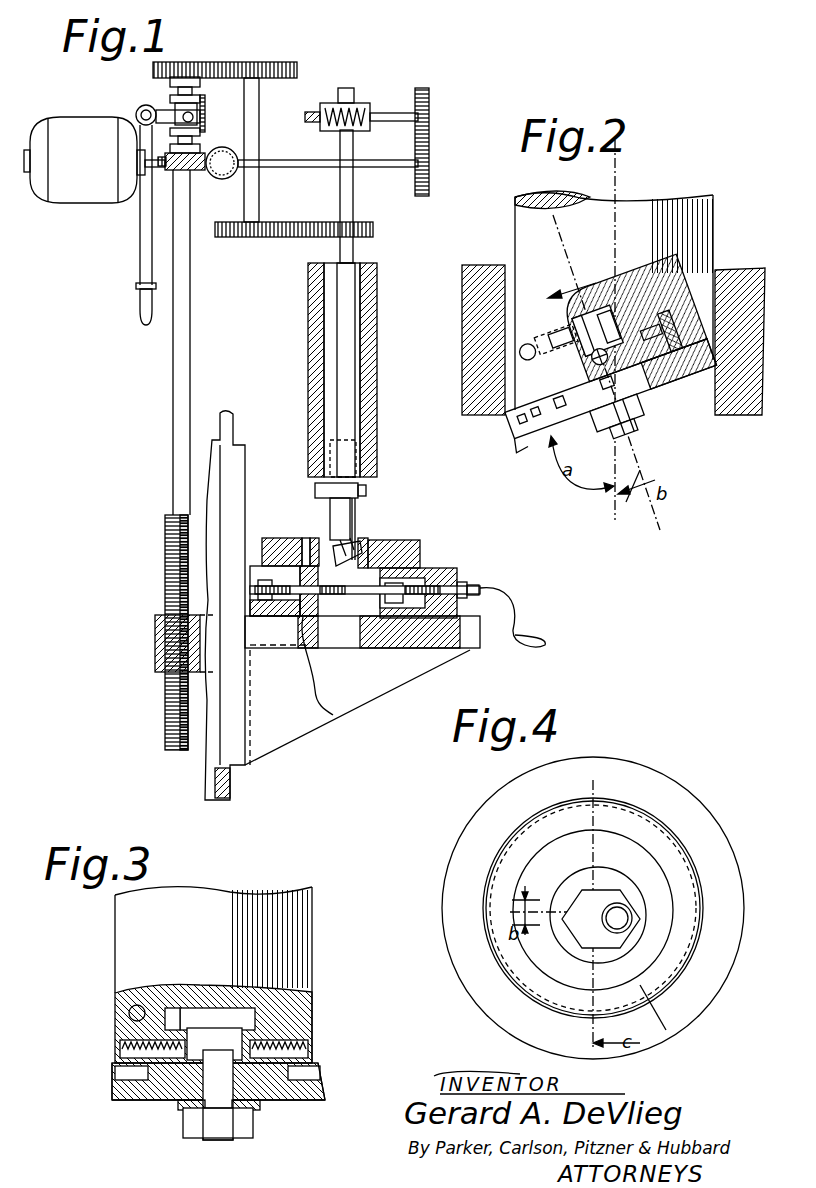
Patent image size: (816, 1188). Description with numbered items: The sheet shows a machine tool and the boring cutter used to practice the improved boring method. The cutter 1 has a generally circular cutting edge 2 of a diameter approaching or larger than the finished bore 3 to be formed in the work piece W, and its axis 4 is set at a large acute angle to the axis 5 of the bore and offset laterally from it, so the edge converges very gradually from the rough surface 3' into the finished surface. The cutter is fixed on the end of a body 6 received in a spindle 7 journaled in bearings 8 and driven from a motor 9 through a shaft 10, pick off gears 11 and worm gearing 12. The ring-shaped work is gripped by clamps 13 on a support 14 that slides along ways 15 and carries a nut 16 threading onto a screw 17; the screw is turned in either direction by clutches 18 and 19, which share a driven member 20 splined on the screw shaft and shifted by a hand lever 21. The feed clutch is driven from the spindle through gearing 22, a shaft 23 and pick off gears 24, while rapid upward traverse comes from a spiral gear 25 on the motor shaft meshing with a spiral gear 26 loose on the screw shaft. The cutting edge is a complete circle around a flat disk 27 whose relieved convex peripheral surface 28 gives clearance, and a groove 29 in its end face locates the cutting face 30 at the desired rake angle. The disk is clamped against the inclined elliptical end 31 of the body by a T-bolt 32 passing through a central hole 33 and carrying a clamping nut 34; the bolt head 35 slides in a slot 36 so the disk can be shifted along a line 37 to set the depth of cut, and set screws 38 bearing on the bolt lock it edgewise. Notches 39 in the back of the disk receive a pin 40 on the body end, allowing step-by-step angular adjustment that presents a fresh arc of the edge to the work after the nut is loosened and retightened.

In FIG. 1, the cutter 1 is at (337, 544).
In FIG. 2, the cutter 1 is at (699, 422).
In FIG. 3, the cutter 1 is at (290, 1120).
In FIG. 4, the cutter 1 is at (636, 820).
In FIG. 2, the cutting edge 2 is at (512, 446).
In FIG. 3, the cutting edge 2 is at (326, 1101).
In FIG. 4, the cutting edge 2 is at (660, 838).
In FIG. 2, the finished bore 3 is at (572, 282).
In FIG. 4, the finished bore 3 is at (690, 841).
In FIG. 4, the rough surface 3' is at (705, 868).
In FIG. 2, the cutter axis 4 is at (560, 268).
In FIG. 4, the cutter axis 4 is at (617, 918).
In FIG. 2, the bore axis 5 is at (622, 330).
In FIG. 4, the bore axis 5 is at (618, 900).
In FIG. 1, the body 6 is at (330, 508).
In FIG. 2, the body 6 is at (708, 198).
In FIG. 3, the body 6 is at (250, 898).
In FIG. 4, the body 6 is at (678, 990).
In FIG. 1, the spindle 7 is at (326, 382).
In FIG. 1, the bearings 8 is at (320, 318).
In FIG. 1, the motor 9 is at (92, 126).
In FIG. 1, the shaft 10 is at (274, 169).
In FIG. 1, the pick off gears 11 is at (434, 142).
In FIG. 1, the worm gearing 12 is at (367, 100).
In FIG. 1, the clamps 13 is at (278, 538).
In FIG. 1, the support 14 is at (462, 587).
In FIG. 1, the ways 15 is at (232, 426).
In FIG. 1, the nut 16 is at (156, 640).
In FIG. 1, the screw 17 is at (166, 575).
In FIG. 1, the clutch 18 is at (200, 141).
In FIG. 1, the clutch 19 is at (203, 106).
In FIG. 1, the driven member 20 is at (170, 101).
In FIG. 1, the hand lever 21 is at (138, 305).
In FIG. 1, the gearing 22 is at (280, 243).
In FIG. 1, the shaft 23 is at (260, 137).
In FIG. 1, the pick off gears 24 is at (220, 61).
In FIG. 1, the spiral gear 25 is at (222, 180).
In FIG. 1, the spiral gear 26 is at (168, 170).
In FIG. 1, the disk 27 is at (300, 591).
In FIG. 2, the disk 27 is at (611, 396).
In FIG. 3, the disk 27 is at (160, 1090).
In FIG. 4, the disk 27 is at (672, 938).
In FIG. 3, the peripheral surface 28 is at (326, 1085).
In FIG. 3, the groove 29 is at (125, 1100).
In FIG. 2, the cutting face 30 is at (633, 317).
In FIG. 3, the cutting face 30 is at (298, 1102).
In FIG. 4, the cutting face 30 is at (688, 898).
In FIG. 2, the body end 31 is at (528, 415).
In FIG. 3, the body end 31 is at (118, 1073).
In FIG. 2, the T-bolt 32 is at (608, 326).
In FIG. 3, the T-bolt 32 is at (224, 1040).
In FIG. 2, the hole 33 is at (619, 418).
In FIG. 3, the hole 33 is at (212, 1098).
In FIG. 3, the clamping nut 34 is at (195, 1138).
In FIG. 4, the clamping nut 34 is at (630, 906).
In FIG. 2, the bolt head 35 is at (597, 330).
In FIG. 3, the bolt head 35 is at (215, 1008).
In FIG. 2, the slot 36 is at (583, 335).
In FIG. 3, the slot 36 is at (175, 1008).
In FIG. 2, the adjustment line 37 is at (584, 392).
In FIG. 4, the adjustment line 37 is at (600, 860).
In FIG. 2, the set screws 38 is at (562, 352).
In FIG. 3, the set screws 38 is at (120, 1046).
In FIG. 2, the notches 39 is at (651, 332).
In FIG. 3, the notches 39 is at (318, 1073).
In FIG. 2, the pin 40 is at (670, 331).
In FIG. 1, the work piece W is at (366, 538).
In FIG. 2, the work piece W is at (750, 272).
In FIG. 4, the work piece W is at (708, 820).